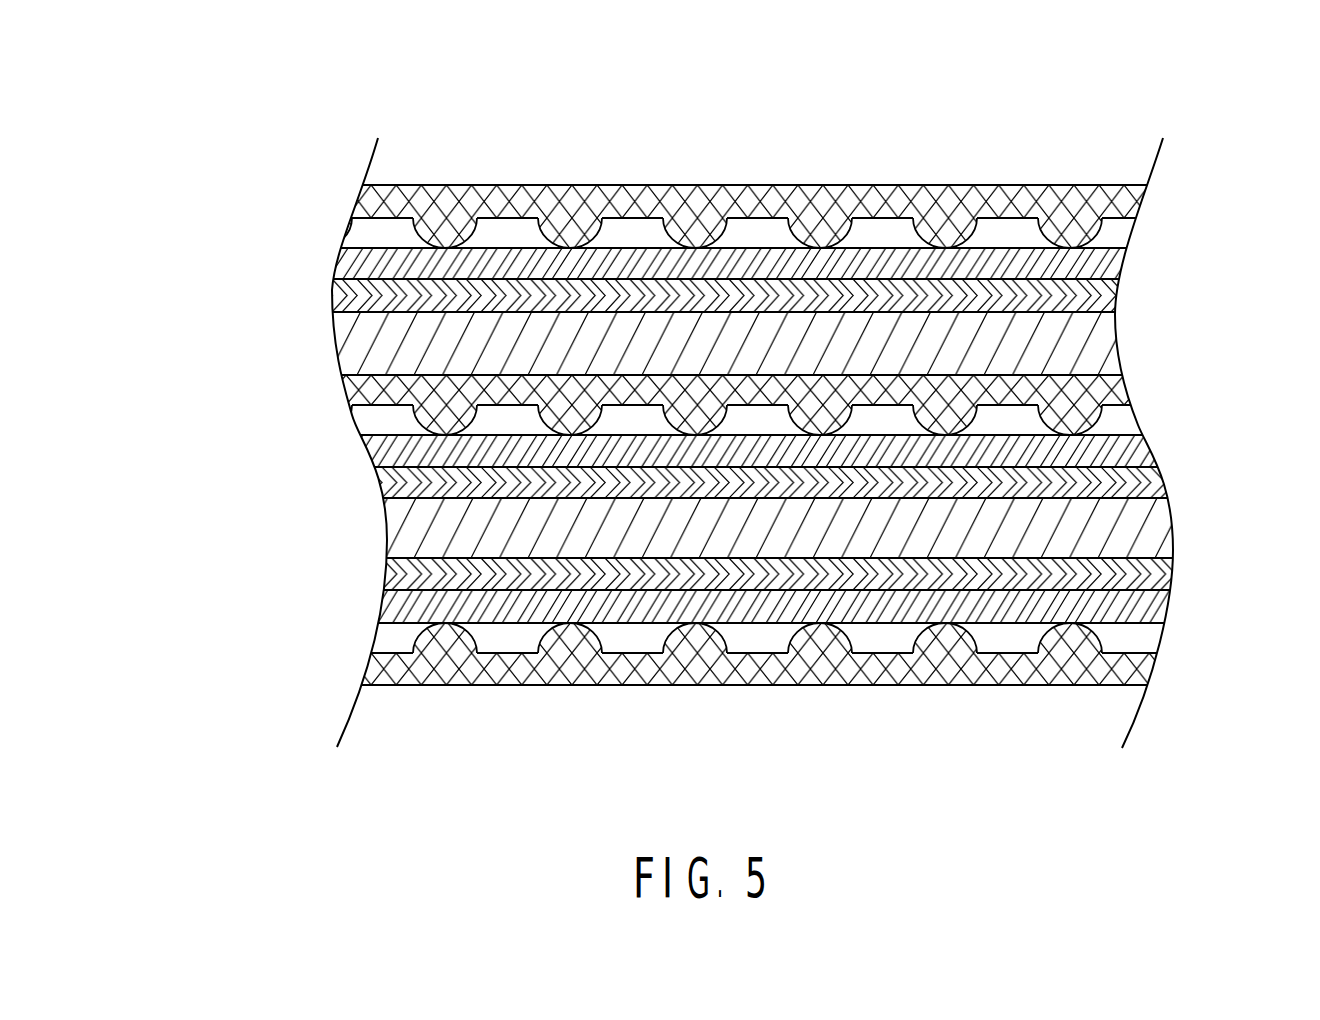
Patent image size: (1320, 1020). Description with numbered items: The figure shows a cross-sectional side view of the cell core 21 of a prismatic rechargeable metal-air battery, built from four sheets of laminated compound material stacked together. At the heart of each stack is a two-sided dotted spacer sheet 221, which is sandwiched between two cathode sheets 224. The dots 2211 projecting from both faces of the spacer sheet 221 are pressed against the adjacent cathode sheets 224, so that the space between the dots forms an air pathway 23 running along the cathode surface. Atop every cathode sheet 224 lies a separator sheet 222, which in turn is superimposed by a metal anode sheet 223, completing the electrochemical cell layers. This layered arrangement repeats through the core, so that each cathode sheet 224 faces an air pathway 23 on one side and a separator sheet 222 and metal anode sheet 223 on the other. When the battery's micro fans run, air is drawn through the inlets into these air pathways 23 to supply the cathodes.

The cell core 21 is at (415, 100).
The two-sided dotted spacer sheet 221 is at (388, 202).
The dots 2211 is at (702, 208).
The separator sheet 222 is at (350, 297).
The metal anode sheet 223 is at (375, 350).
The cathode sheet 224 is at (355, 265).
The air pathway 23 is at (385, 413).